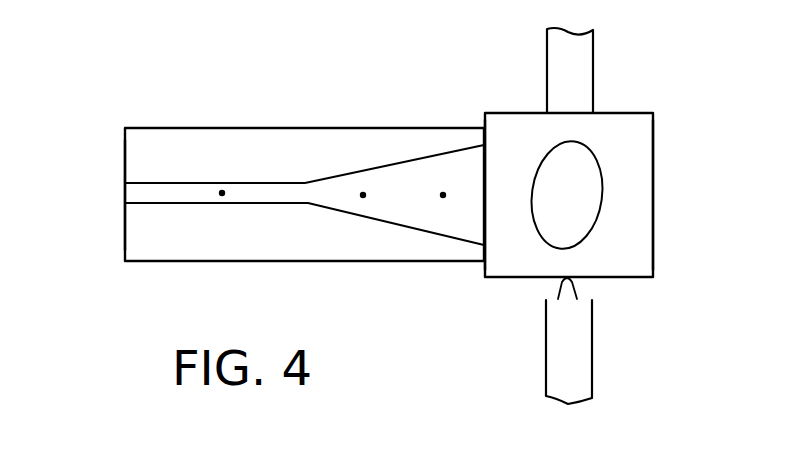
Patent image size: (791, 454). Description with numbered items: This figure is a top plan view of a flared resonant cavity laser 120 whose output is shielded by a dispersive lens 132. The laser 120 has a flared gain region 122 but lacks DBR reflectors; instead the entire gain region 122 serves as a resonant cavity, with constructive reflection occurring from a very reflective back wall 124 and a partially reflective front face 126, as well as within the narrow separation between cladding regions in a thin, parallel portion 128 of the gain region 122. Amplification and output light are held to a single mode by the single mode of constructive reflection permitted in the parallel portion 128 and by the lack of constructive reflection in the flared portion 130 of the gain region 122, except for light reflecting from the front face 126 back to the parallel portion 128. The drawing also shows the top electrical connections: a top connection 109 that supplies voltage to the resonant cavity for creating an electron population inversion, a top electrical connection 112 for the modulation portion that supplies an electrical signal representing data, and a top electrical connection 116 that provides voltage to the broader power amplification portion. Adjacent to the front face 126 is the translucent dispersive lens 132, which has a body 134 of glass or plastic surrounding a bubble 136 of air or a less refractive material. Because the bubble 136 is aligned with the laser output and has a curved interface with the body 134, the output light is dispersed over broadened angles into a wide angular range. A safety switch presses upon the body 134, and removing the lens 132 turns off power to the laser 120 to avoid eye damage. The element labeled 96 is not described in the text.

The flared resonant cavity laser 120 is at (205, 83).
The back wall 124 is at (125, 192).
The parallel portion 128 is at (252, 190).
The flared portion 130 is at (388, 224).
The top connection 109 is at (222, 196).
The flared gain region 122 is at (286, 212).
The top electrical connection 112 is at (363, 193).
The top electrical connection 116 is at (443, 193).
The body 134 is at (608, 128).
The front face 126 is at (487, 175).
The dispersive lens 132 is at (653, 137).
The bubble 136 is at (582, 218).
The outlet port 96 is at (558, 287).